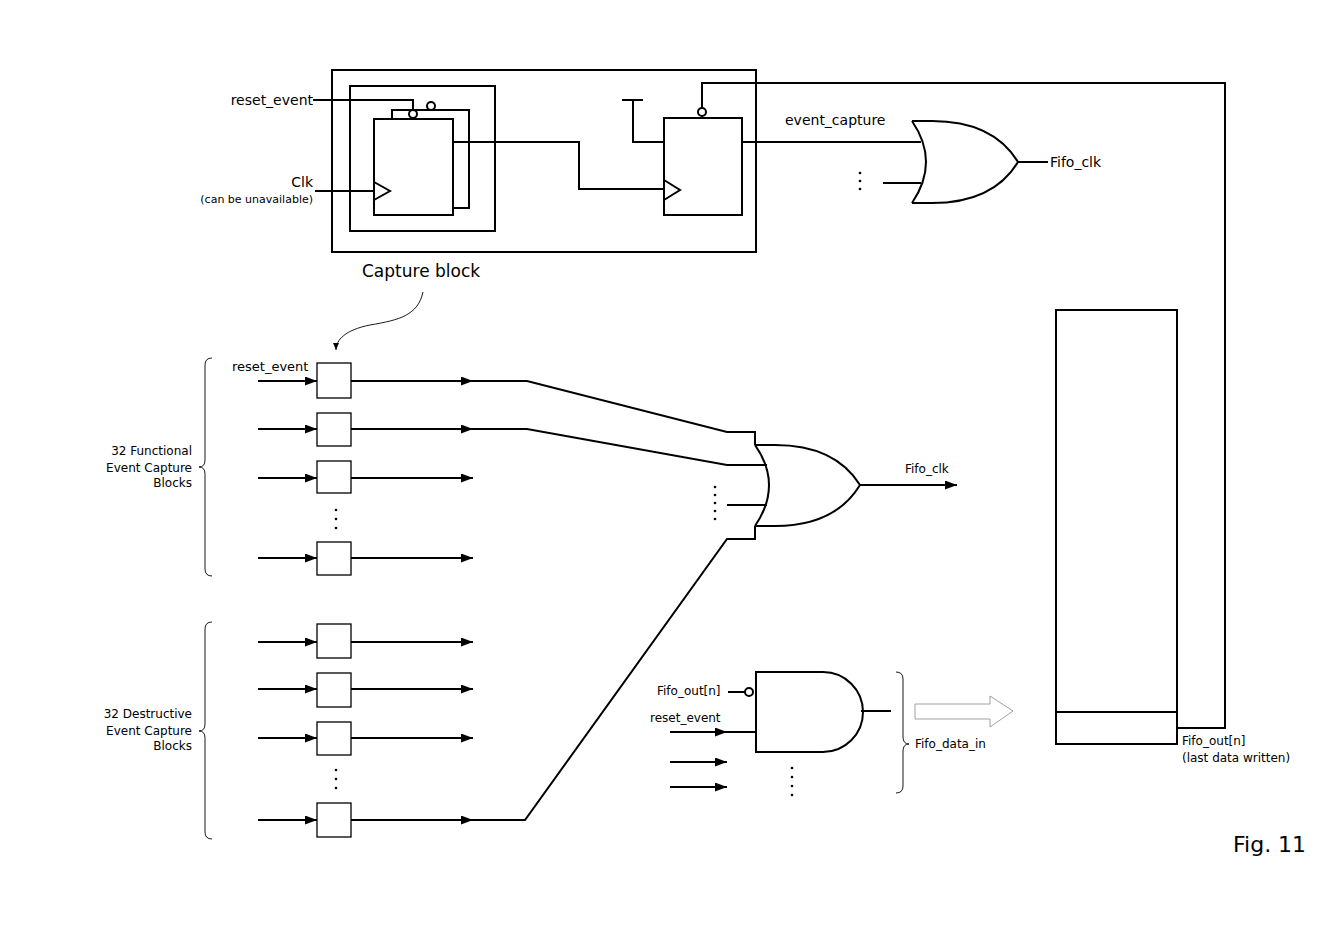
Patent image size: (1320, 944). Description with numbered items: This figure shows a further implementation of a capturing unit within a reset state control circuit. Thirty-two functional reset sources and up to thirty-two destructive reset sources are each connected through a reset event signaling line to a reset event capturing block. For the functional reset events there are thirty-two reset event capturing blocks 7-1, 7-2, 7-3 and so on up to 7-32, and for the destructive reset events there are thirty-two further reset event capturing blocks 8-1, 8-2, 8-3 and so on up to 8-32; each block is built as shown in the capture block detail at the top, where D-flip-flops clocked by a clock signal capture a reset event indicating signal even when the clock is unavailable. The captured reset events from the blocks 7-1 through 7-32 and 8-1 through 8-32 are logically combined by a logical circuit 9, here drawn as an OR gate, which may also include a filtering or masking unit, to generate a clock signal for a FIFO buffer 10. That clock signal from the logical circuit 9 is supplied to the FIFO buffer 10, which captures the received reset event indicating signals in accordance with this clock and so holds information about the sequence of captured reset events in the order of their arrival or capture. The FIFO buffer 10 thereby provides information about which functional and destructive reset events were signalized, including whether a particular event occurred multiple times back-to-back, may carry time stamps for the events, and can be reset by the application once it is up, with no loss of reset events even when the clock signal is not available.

The reset event capturing block 7-1 is at (355, 392).
The reset event capturing block 7-2 is at (355, 440).
The reset event capturing block 7-3 is at (355, 488).
The reset event capturing block 7-32 is at (355, 570).
The reset event capturing block 8-1 is at (355, 653).
The reset event capturing block 8-2 is at (355, 701).
The reset event capturing block 8-3 is at (355, 750).
The reset event capturing block 8-32 is at (355, 832).
The logical circuit 9 is at (807, 474).
The FIFO buffer 10 is at (1116, 527).